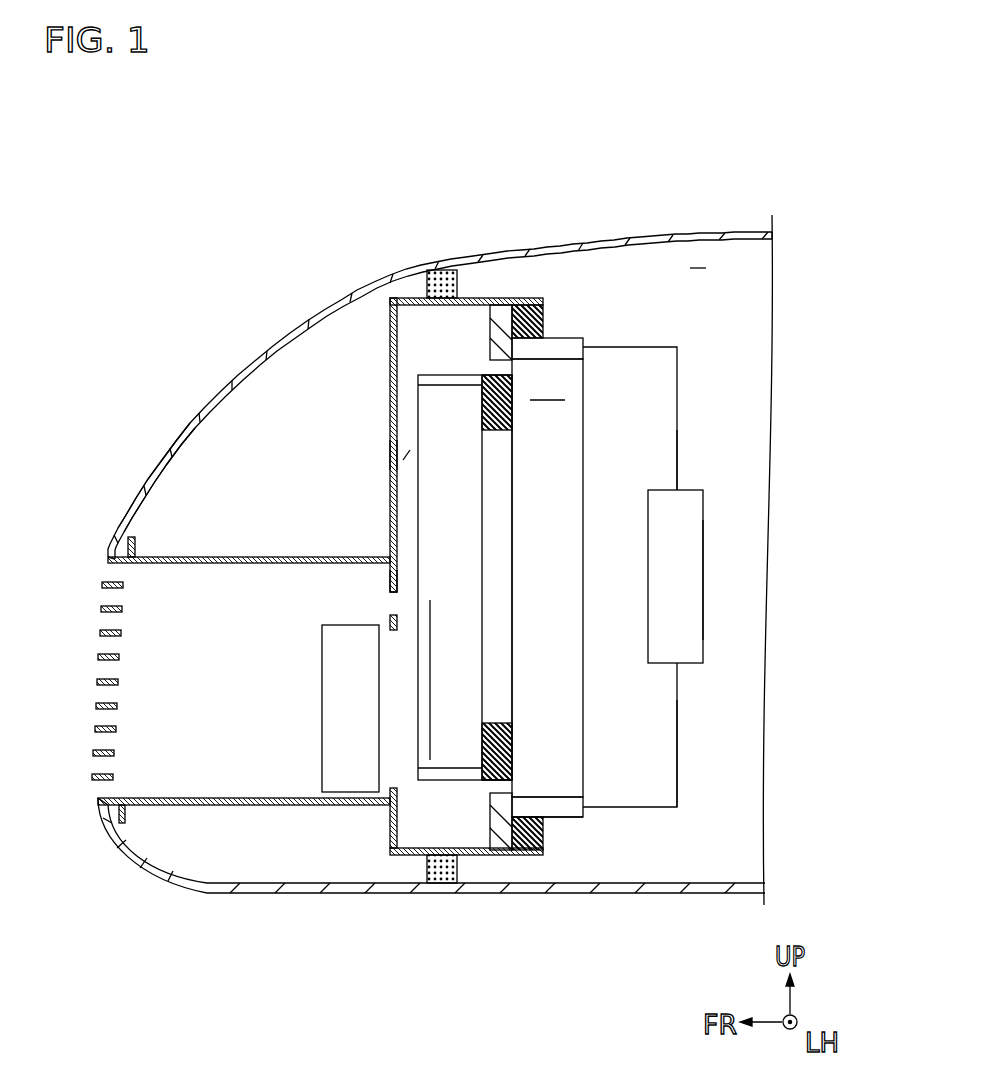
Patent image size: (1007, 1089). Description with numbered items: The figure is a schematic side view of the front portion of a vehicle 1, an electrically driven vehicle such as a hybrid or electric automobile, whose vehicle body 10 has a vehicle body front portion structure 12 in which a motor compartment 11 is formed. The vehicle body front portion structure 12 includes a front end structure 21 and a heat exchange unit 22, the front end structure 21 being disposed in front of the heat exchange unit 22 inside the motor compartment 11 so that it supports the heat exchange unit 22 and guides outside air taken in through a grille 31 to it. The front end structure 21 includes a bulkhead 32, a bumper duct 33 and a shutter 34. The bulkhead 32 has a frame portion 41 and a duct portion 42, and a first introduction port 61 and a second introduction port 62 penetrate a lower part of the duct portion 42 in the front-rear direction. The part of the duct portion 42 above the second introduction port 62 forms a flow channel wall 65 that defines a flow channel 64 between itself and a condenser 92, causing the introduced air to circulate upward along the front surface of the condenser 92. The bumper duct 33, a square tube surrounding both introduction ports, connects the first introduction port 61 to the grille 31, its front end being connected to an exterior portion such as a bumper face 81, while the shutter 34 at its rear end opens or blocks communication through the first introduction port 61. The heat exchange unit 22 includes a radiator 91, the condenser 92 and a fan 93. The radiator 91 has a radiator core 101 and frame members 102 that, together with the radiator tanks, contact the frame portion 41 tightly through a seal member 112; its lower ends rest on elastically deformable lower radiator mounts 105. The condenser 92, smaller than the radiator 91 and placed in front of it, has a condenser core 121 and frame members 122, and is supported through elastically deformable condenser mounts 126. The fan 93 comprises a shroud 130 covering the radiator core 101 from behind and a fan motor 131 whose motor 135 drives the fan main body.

The vehicle 1 is at (778, 150).
The vehicle body 10 is at (642, 232).
The motor compartment 11 is at (698, 266).
The vehicle body front portion structure 12 is at (710, 374).
The front end structure 21 is at (330, 362).
The heat exchange unit 22 is at (576, 832).
The grille 31 is at (100, 633).
The bulkhead 32 is at (412, 296).
The bumper duct 33 is at (272, 557).
The shutter 34 is at (322, 762).
The frame portion 41 is at (502, 318).
The duct portion 42 is at (390, 452).
The first introduction port 61 is at (393, 846).
The second introduction port 62 is at (392, 598).
The flow channel 64 is at (406, 455).
The flow channel wall 65 is at (354, 465).
The bumper face 81 is at (160, 437).
The radiator 91 is at (590, 720).
The condenser 92 is at (468, 790).
The fan 93 is at (690, 473).
The radiator core 101 is at (555, 415).
The frame members 102 is at (562, 348).
The lower radiator mounts 105 is at (530, 835).
The seal member 112 is at (527, 328).
The condenser core 121 is at (440, 684).
The frame members 122 is at (448, 375).
The condenser mounts 126 is at (503, 752).
The shroud 130 is at (677, 750).
The fan motor 131 is at (703, 592).
The motor 135 is at (775, 580).